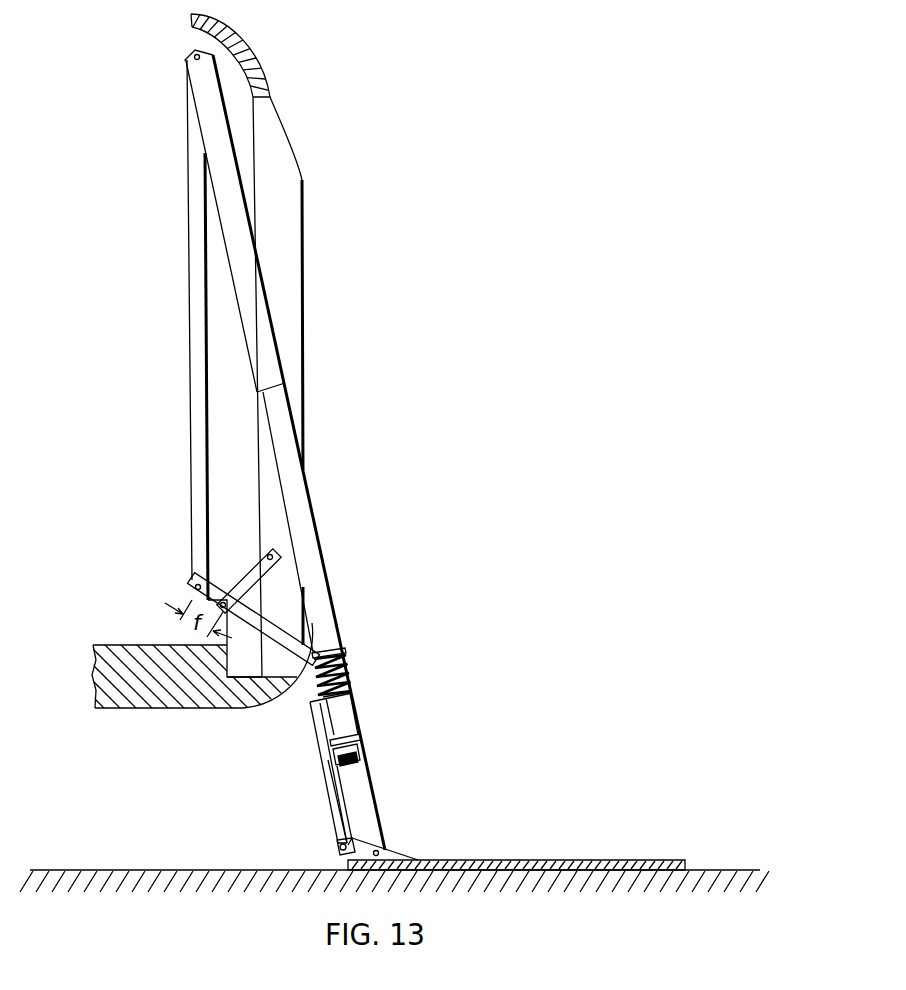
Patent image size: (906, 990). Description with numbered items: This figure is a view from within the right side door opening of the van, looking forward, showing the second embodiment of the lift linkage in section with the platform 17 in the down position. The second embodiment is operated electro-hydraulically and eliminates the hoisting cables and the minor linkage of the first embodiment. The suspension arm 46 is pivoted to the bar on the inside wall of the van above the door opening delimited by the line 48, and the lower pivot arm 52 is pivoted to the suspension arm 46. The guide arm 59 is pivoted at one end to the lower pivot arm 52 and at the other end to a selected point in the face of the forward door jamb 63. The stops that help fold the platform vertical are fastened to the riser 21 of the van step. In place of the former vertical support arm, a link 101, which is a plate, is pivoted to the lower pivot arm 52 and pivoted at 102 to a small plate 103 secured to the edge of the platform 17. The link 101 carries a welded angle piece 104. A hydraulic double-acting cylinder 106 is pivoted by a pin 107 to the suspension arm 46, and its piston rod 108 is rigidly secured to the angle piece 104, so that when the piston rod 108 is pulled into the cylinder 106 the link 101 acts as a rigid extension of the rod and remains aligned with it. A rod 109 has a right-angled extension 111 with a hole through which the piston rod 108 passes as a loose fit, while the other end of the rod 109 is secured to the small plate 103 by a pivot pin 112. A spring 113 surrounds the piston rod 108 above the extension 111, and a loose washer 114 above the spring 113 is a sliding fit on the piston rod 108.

The platform 17 is at (541, 860).
The riser 21 is at (227, 660).
The suspension arm 46 is at (188, 345).
The door opening line 48 is at (247, 72).
The lower pivot arm 52 is at (253, 623).
The guide arm 59 is at (255, 575).
The forward door jamb 63 is at (286, 295).
The link 101 is at (358, 782).
The pivot 102 is at (385, 848).
The small plate 103 is at (398, 856).
The angle piece 104 is at (357, 735).
The hydraulic double-acting cylinder 106 is at (203, 95).
The pin 107 is at (195, 57).
The piston rod 108 is at (303, 543).
The rod 109 is at (323, 753).
The right-angled extension 111 is at (323, 701).
The pivot pin 112 is at (338, 845).
The spring 113 is at (348, 672).
The loose washer 114 is at (342, 655).